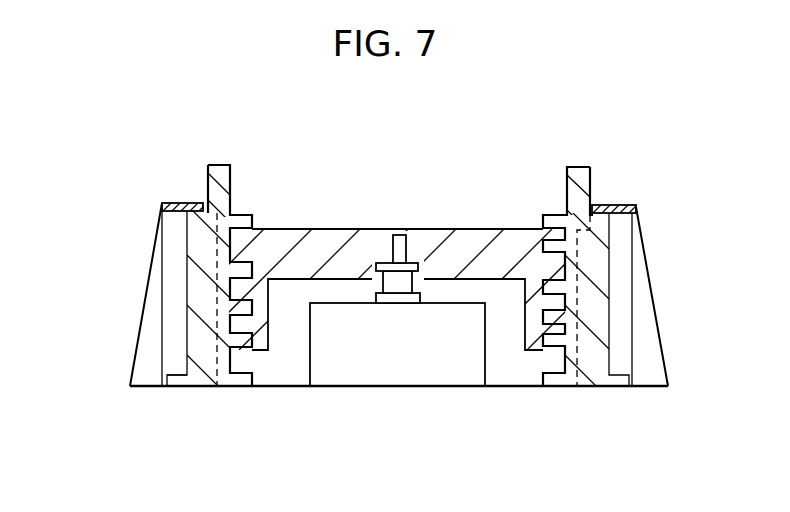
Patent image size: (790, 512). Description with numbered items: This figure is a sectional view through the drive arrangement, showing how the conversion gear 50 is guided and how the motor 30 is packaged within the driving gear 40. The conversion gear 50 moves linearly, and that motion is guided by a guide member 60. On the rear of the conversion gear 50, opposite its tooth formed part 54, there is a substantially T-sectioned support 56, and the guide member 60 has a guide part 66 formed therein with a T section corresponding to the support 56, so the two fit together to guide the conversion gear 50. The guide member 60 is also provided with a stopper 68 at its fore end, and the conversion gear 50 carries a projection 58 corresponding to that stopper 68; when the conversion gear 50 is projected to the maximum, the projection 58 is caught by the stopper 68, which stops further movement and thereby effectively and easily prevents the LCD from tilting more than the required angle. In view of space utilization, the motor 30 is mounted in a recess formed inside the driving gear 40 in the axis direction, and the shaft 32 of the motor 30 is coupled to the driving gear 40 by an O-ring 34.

The motor 30 is at (397, 362).
The shaft 32 is at (398, 236).
The O-ring 34 is at (413, 266).
The driving gear 40 is at (325, 233).
The conversion gear 50 is at (208, 393).
The tooth formed part 54 is at (240, 215).
The support 56 is at (195, 330).
The projection 58 is at (175, 388).
The guide member 60 is at (150, 232).
The guide part 66 is at (175, 273).
The stopper 68 is at (178, 203).